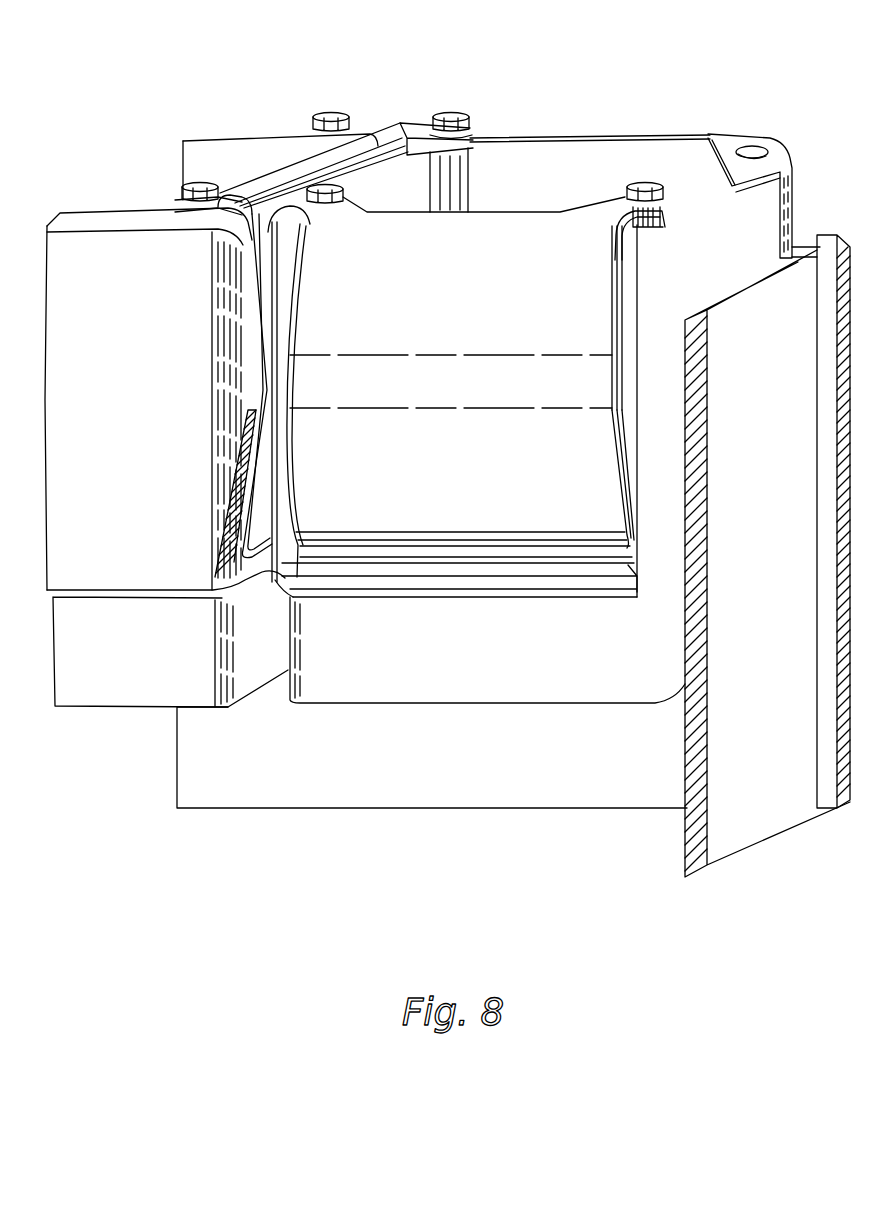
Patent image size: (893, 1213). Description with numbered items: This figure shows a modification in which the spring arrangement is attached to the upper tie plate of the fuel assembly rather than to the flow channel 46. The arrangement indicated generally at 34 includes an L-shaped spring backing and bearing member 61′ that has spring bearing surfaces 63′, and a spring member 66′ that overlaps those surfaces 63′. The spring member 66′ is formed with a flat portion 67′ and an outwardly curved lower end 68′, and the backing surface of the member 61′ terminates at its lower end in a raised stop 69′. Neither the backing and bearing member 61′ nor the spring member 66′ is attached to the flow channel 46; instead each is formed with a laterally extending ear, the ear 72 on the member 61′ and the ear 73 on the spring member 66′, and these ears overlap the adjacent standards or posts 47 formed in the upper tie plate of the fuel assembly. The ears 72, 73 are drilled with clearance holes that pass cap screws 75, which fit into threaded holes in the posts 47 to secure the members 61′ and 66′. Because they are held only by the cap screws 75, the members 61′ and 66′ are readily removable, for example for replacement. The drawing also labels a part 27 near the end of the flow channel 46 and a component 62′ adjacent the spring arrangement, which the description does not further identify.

The clamping assembly 34 is at (426, 80).
The mounting lug 27 is at (697, 128).
The flow channel 46 is at (611, 137).
The standards or posts 47 is at (470, 187).
The cap screws 75 is at (465, 115).
The laterally extending ear 72 is at (473, 138).
The laterally extending ear 73 is at (352, 202).
The backing and bearing member 61′ is at (633, 305).
The side block 62′ is at (133, 392).
The spring bearing surfaces 63′ is at (617, 413).
The spring member 66′ is at (612, 470).
The flat portion 67′ is at (463, 392).
The outwardly curved lower end 68′ is at (623, 550).
The raised stop 69′ is at (623, 578).